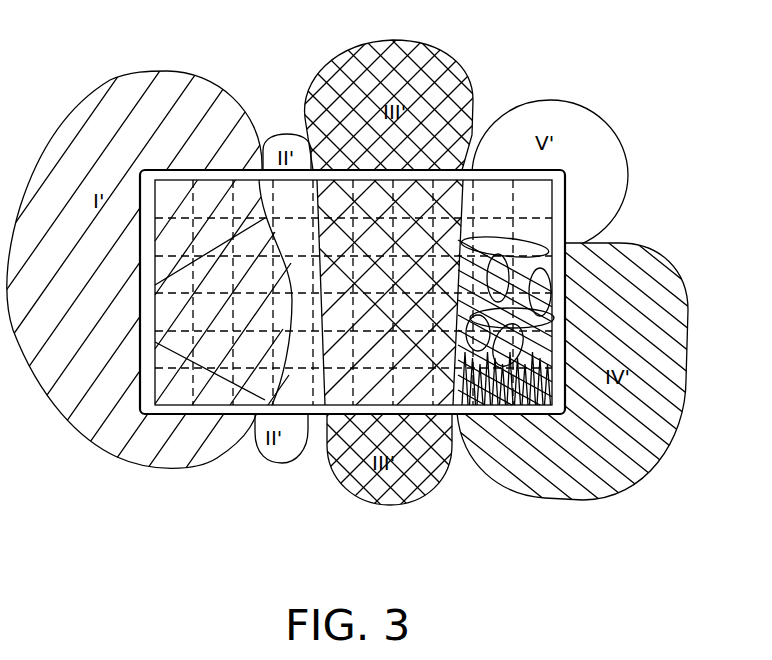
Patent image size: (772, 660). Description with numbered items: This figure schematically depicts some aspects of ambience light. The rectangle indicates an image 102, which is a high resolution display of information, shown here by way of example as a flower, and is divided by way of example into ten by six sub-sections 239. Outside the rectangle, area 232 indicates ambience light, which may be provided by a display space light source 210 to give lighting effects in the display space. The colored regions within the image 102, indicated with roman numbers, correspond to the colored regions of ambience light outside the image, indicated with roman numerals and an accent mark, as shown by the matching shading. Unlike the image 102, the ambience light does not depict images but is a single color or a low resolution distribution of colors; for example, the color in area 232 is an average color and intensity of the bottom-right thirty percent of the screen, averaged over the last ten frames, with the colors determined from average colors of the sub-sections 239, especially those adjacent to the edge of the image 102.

The image 102 is at (307, 420).
The display space light source 210 is at (482, 192).
The ambience light area 232 is at (333, 90).
The sub-sections of the image 239 is at (173, 237).